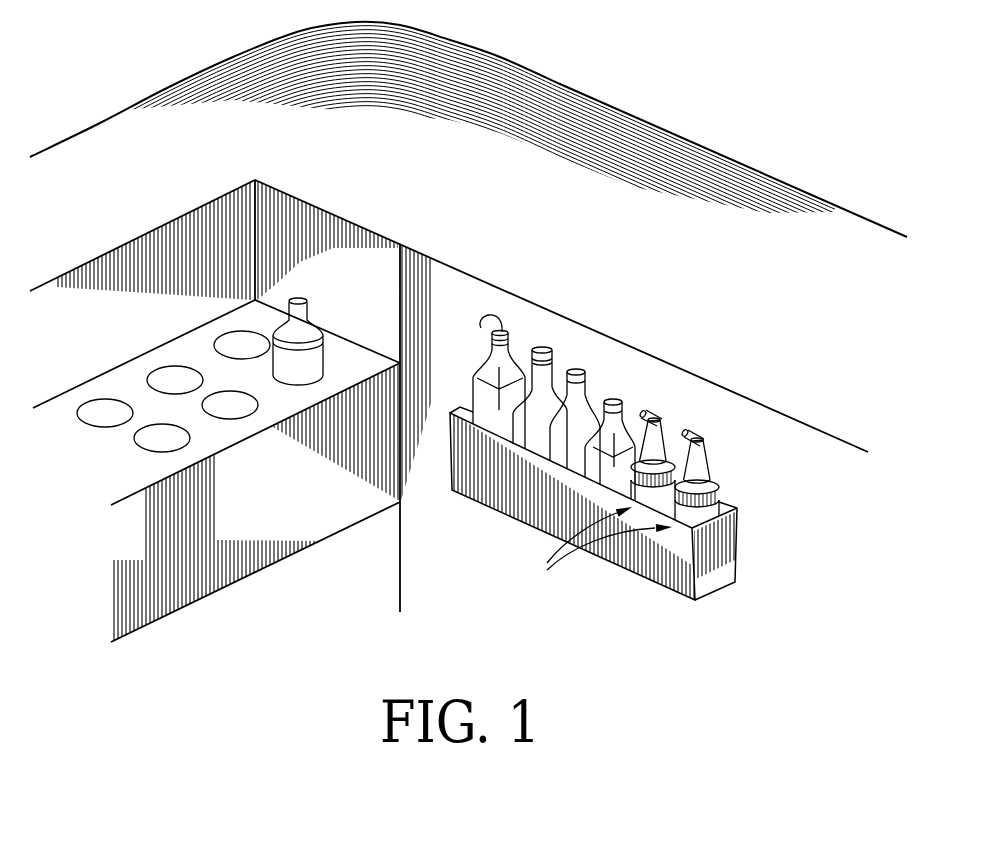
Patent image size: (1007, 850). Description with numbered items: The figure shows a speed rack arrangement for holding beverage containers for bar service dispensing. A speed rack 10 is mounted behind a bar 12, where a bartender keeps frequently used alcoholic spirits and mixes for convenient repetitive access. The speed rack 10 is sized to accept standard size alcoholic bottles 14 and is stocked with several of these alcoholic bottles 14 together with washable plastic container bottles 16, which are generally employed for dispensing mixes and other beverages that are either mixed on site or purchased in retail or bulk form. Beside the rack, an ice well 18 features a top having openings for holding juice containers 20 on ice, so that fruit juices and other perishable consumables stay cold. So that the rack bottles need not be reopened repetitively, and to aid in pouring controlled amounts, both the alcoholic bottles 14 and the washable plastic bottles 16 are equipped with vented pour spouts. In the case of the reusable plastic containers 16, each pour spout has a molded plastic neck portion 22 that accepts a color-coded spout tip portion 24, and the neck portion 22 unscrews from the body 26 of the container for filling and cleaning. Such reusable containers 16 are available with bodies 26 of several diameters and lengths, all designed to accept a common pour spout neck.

The speed rack 10 is at (738, 547).
The bar 12 is at (737, 282).
The alcoholic bottles 14 is at (592, 395).
The washable plastic container bottles 16 is at (593, 552).
The ice well 18 is at (280, 511).
The juice container 20 is at (318, 356).
The neck portion 22 is at (708, 460).
The spout tip portion 24 is at (485, 318).
The body 26 is at (723, 483).